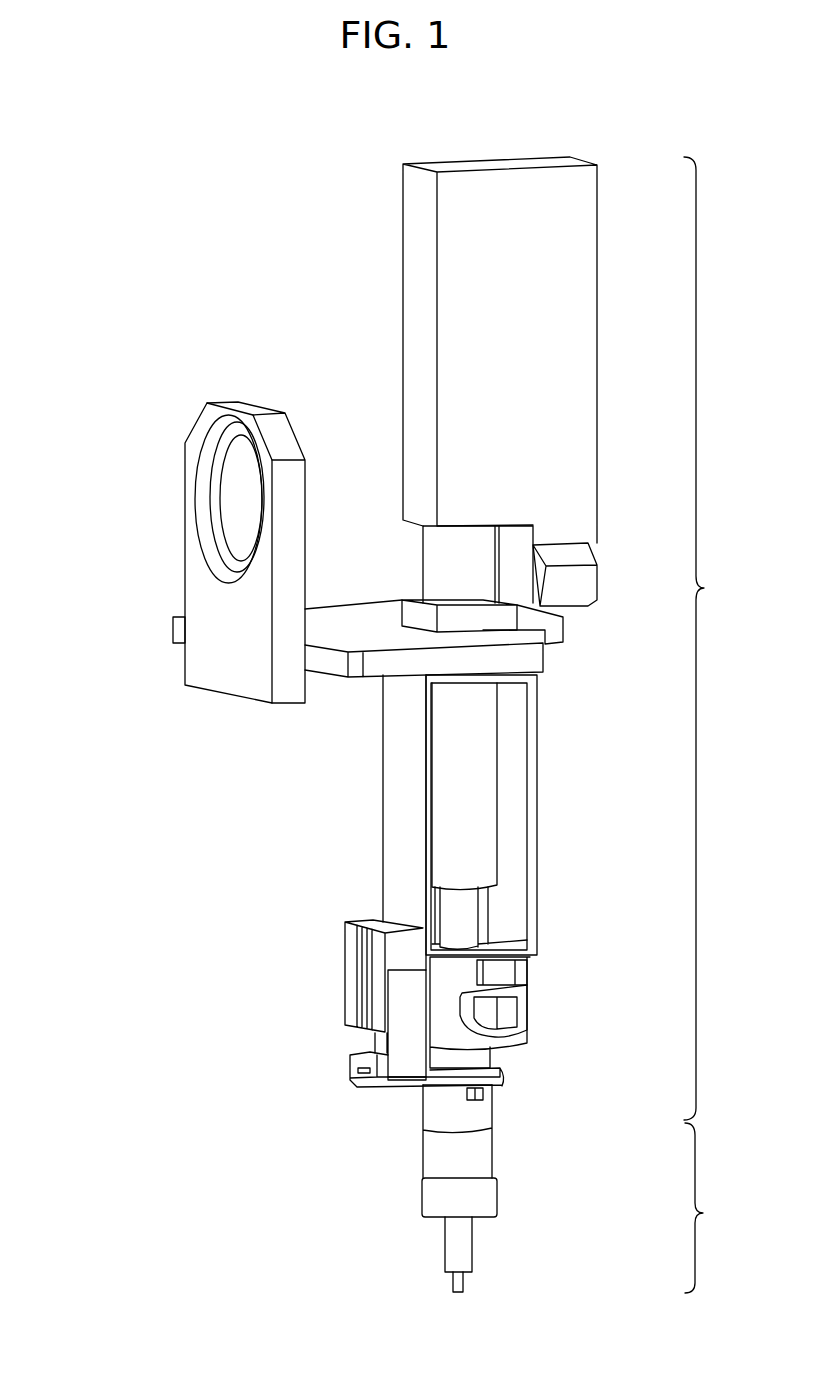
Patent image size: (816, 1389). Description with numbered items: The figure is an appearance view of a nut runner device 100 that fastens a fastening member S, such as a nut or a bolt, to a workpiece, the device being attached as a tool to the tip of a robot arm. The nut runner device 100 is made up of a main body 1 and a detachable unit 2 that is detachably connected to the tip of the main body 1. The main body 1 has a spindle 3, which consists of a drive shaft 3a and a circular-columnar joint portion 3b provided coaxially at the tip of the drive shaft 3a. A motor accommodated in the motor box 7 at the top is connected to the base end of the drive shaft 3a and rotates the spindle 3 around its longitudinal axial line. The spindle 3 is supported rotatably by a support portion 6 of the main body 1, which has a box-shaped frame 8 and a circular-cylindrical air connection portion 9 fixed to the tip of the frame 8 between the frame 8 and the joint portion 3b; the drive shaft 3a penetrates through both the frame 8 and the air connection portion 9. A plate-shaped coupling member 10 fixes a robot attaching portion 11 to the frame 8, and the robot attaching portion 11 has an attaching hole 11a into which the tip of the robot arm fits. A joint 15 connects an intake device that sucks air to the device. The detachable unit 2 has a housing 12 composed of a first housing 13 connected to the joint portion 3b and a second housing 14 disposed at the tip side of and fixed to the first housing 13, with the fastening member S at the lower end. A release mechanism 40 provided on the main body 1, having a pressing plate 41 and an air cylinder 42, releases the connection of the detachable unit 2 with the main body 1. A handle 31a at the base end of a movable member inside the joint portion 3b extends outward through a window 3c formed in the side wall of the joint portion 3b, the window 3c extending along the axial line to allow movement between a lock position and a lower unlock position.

The nut runner device 100 is at (148, 236).
The main body 1 is at (707, 638).
The detachable unit 2 is at (707, 1208).
The motor box 7 is at (403, 290).
The robot attaching portion 11 is at (192, 552).
The attaching hole 11a is at (222, 488).
The coupling member 10 is at (327, 677).
The support portion 6 is at (344, 859).
The frame 8 is at (537, 720).
The drive shaft 3a is at (497, 800).
The spindle 3 is at (530, 889).
The air connection portion 9 is at (520, 1038).
The joint 15 is at (530, 982).
The air cylinder 42 is at (345, 967).
The release mechanism 40 is at (320, 1050).
The pressing plate 41 is at (505, 1075).
The handle 31a is at (460, 1088).
The window 3c is at (484, 1095).
The joint portion 3b is at (493, 1112).
The first housing 13 is at (423, 1158).
The second housing 14 is at (497, 1200).
The housing 12 is at (388, 1216).
The fastening member S is at (464, 1282).